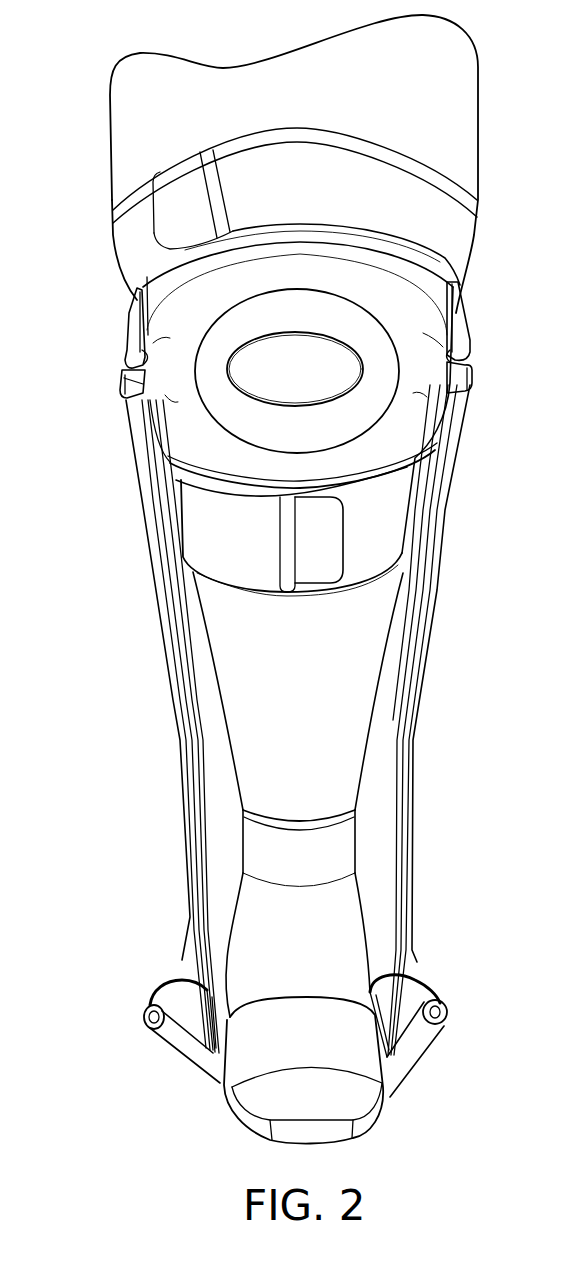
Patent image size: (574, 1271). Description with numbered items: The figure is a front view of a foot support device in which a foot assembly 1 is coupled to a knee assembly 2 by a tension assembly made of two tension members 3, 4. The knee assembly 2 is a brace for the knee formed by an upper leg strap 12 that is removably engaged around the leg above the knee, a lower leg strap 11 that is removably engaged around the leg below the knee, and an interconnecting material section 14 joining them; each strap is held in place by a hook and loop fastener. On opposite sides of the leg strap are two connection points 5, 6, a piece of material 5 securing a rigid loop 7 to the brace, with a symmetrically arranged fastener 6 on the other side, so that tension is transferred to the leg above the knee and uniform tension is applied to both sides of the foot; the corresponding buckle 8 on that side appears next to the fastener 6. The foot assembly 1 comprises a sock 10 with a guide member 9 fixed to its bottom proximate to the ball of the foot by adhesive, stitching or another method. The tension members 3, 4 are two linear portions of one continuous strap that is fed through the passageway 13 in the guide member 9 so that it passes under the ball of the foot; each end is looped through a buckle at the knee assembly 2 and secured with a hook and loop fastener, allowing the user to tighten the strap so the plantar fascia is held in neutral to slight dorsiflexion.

The foot assembly 1 is at (205, 1120).
The knee assembly 2 is at (363, 300).
The tension member 3 is at (183, 683).
The tension member 4 is at (413, 690).
The connection point 5 is at (138, 348).
The connection point 6 is at (455, 332).
The rigid loop 7 is at (120, 384).
The right buckle 8 is at (467, 377).
The guide member 9 is at (147, 1018).
The sock 10 is at (350, 1096).
The lower leg strap 11 is at (198, 520).
The upper leg strap 12 is at (232, 163).
The passageway 13 is at (443, 998).
The interconnecting material section 14 is at (393, 445).